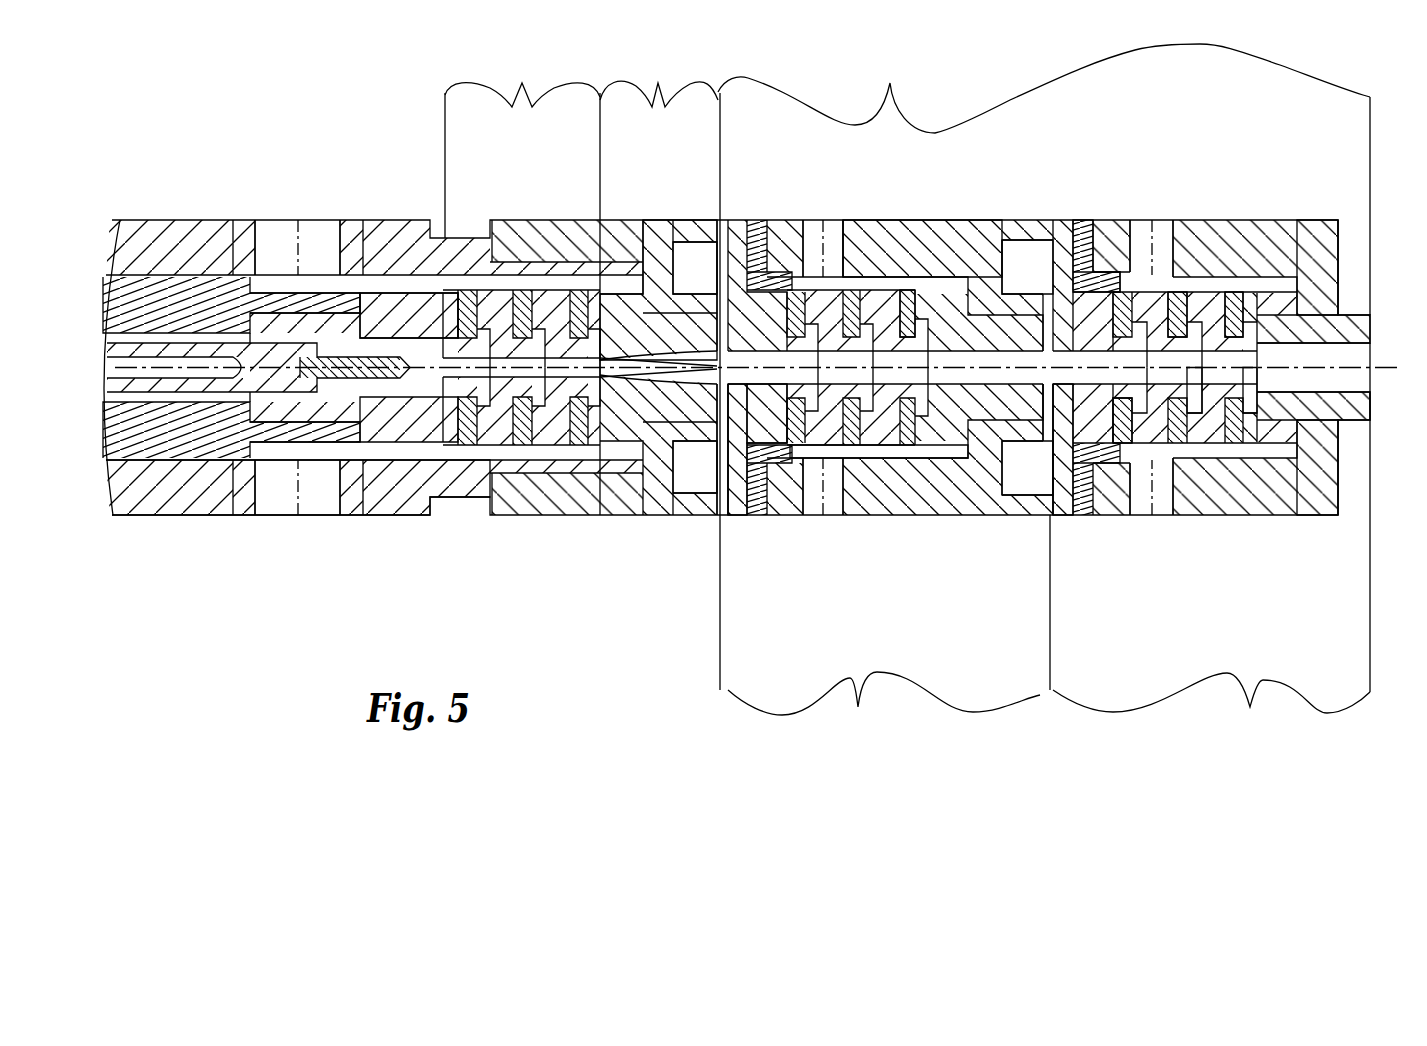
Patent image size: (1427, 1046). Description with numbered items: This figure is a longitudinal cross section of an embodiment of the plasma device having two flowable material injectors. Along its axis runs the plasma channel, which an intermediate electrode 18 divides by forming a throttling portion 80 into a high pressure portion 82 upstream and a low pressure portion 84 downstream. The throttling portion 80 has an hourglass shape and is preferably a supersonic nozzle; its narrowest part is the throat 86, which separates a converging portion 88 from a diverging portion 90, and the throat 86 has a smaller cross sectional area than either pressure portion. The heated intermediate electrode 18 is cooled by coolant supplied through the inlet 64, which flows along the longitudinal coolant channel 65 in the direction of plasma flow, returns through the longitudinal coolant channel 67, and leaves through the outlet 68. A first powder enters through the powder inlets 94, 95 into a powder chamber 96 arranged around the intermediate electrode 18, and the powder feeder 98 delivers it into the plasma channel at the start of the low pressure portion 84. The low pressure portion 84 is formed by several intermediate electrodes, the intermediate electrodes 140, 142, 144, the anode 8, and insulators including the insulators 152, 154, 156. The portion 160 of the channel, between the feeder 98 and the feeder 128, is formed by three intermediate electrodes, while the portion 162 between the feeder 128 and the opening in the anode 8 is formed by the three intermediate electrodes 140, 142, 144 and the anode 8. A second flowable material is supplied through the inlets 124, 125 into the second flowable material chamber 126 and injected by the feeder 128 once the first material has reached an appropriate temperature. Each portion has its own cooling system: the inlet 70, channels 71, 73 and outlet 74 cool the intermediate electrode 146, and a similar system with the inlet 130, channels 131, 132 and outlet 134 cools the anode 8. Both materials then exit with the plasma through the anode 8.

The anode 8 is at (1363, 330).
The intermediate electrode 18 is at (628, 313).
The inlet 64 is at (272, 498).
The longitudinal coolant channel 65 is at (390, 447).
The longitudinal coolant channel 67 is at (388, 295).
The outlet 68 is at (273, 237).
The inlet 70 is at (840, 492).
The longitudinal coolant channel 71 is at (940, 452).
The longitudinal channel 73 is at (933, 280).
The outlet 74 is at (817, 240).
The throttling portion 80 is at (659, 278).
The high pressure portion 82 is at (522, 141).
The low pressure portion 84 is at (1044, 367).
The throat 86 is at (637, 372).
The converging portion 88 is at (590, 372).
The diverging portion 90 is at (795, 440).
The powder inlet 94 is at (680, 245).
The powder inlet 95 is at (683, 490).
The powder chamber 96 is at (715, 460).
The powder feeder 98 is at (745, 388).
The inlet 124 is at (1005, 227).
The inlet 125 is at (1007, 493).
The second flowable material chamber 126 is at (1045, 493).
The feeder 128 is at (1060, 417).
The inlet 130 is at (1165, 470).
The channel 131 is at (1278, 465).
The channel 132 is at (1255, 285).
The outlet 134 is at (1163, 233).
The intermediate electrode 140 is at (1100, 283).
The intermediate electrode 142 is at (1172, 300).
The intermediate electrode 144 is at (1207, 310).
The intermediate electrode 146 is at (920, 290).
The insulator 152 is at (1130, 440).
The insulator 154 is at (1195, 455).
The insulator 156 is at (1252, 447).
The portion of the plasma channel 160 is at (889, 631).
The portion of the plasma channel 162 is at (1211, 545).